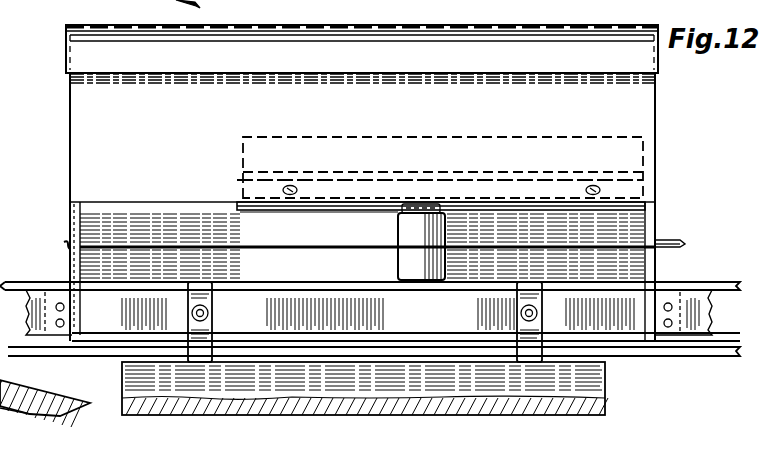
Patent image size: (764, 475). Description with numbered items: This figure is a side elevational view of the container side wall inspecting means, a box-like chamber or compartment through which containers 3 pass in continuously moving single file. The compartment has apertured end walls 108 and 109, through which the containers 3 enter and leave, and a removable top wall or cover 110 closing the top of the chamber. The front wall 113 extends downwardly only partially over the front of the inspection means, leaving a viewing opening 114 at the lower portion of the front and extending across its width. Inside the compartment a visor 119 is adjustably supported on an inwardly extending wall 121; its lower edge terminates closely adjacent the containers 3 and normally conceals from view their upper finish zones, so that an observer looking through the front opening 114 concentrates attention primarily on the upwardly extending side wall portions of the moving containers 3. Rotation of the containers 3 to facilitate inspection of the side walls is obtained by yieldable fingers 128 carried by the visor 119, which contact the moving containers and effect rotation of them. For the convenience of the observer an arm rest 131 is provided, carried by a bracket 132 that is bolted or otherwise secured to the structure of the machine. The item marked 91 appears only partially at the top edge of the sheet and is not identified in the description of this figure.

The container 3 is at (421, 242).
The arrow indicator 91 is at (210, 5).
The apertured end wall 108 is at (657, 217).
The apertured end wall 109 is at (68, 241).
The removable top wall or cover 110 is at (327, 25).
The front wall 113 is at (0, 157).
The viewing opening 114 is at (0, 218).
The visor 119 is at (296, 209).
The inwardly extending wall 121 is at (643, 172).
The yieldable fingers 128 is at (357, 210).
The arm rest 131 is at (50, 386).
The bracket 132 is at (213, 323).